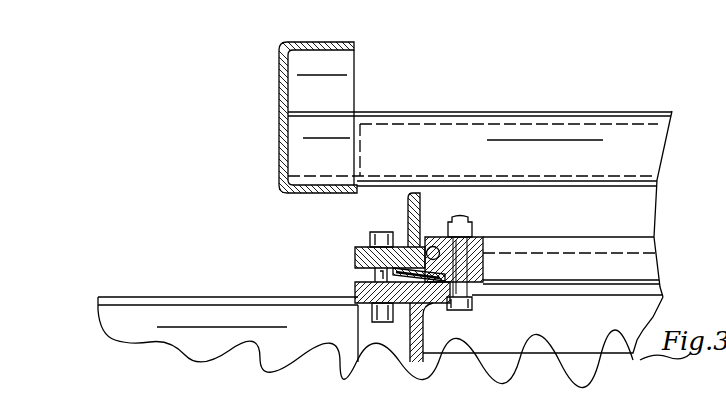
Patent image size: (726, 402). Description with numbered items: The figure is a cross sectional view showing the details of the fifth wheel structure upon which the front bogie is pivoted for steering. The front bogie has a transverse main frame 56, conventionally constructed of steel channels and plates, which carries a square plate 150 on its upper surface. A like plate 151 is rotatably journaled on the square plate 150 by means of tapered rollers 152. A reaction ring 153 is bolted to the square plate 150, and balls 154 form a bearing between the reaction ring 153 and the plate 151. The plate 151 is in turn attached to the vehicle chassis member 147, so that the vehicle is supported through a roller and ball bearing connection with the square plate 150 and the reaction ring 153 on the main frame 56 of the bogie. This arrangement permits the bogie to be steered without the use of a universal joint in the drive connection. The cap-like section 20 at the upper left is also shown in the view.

The cap / door panel end 20 is at (280, 153).
The transverse main frame 56 is at (242, 296).
The vehicle chassis member 147 is at (408, 216).
The square plate 150 is at (357, 288).
The plate 151 is at (355, 260).
The tapered rollers 152 is at (437, 283).
The reaction ring 153 is at (483, 237).
The balls 154 is at (432, 246).